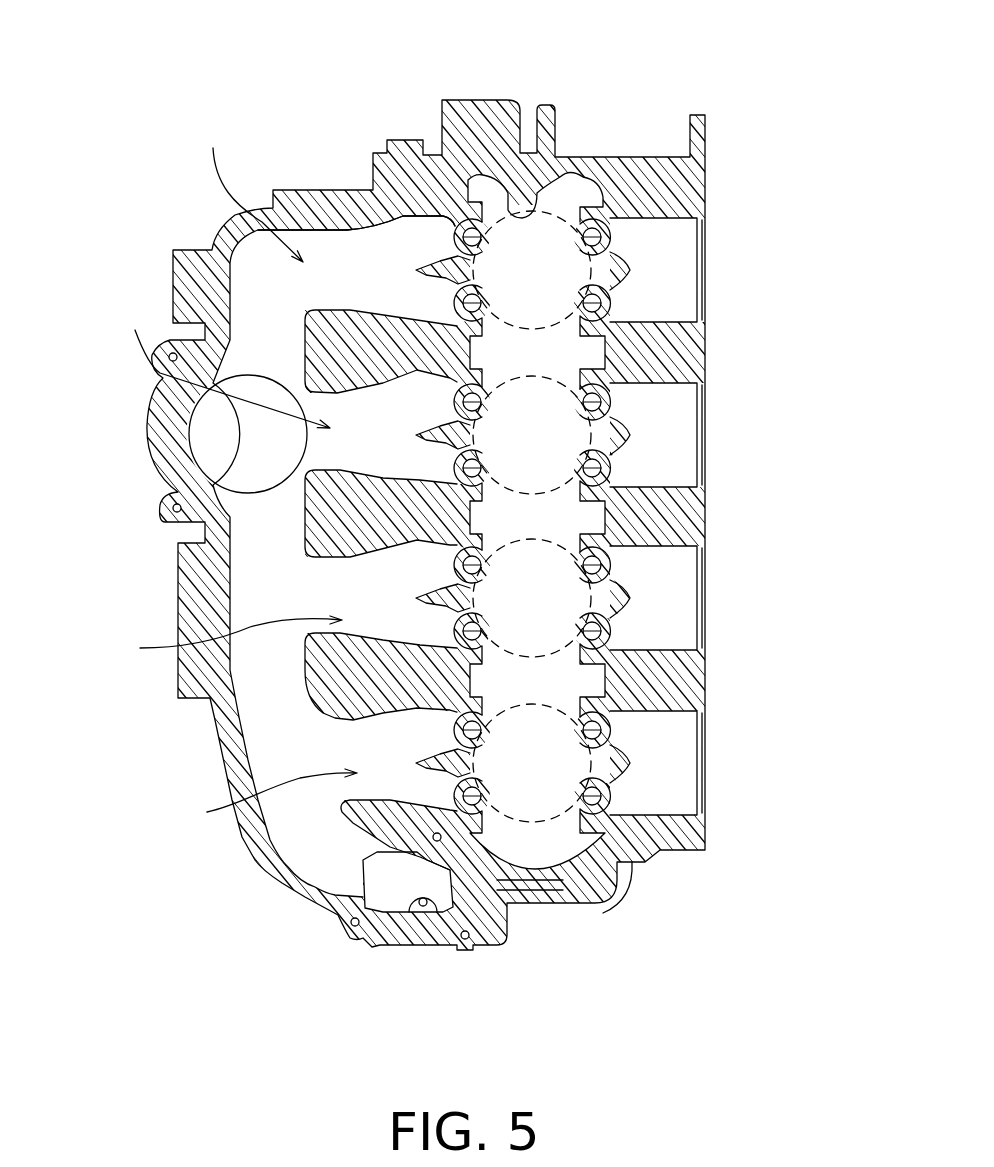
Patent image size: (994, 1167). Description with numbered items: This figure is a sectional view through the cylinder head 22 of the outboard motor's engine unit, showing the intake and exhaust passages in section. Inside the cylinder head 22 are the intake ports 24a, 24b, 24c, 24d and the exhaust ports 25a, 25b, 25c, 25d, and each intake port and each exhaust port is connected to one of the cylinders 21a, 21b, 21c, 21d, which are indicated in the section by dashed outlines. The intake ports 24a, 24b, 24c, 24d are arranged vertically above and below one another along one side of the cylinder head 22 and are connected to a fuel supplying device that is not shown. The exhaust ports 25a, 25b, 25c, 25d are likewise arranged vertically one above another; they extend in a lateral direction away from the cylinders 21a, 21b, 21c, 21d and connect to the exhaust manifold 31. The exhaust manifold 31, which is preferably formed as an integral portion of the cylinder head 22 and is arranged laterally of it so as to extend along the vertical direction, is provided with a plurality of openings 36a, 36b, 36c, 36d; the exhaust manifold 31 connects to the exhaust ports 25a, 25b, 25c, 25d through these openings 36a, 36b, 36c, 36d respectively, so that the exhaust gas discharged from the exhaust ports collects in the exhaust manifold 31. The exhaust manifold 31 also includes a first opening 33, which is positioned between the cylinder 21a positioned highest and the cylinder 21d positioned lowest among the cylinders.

The exhaust manifold 31 is at (274, 143).
The cylinder head 22 is at (572, 103).
The first opening 33 is at (255, 373).
The exhaust port 25a is at (403, 233).
The exhaust port 25b is at (413, 403).
The exhaust port 25c is at (403, 590).
The exhaust port 25d is at (400, 760).
The opening 36a is at (243, 188).
The opening 36b is at (212, 362).
The opening 36c is at (211, 639).
The opening 36d is at (248, 800).
The cylinder 21a is at (600, 211).
The cylinder 21b is at (600, 376).
The cylinder 21c is at (600, 539).
The cylinder 21d is at (600, 704).
The intake port 24a is at (665, 267).
The intake port 24b is at (665, 432).
The intake port 24c is at (665, 595).
The intake port 24d is at (665, 760).